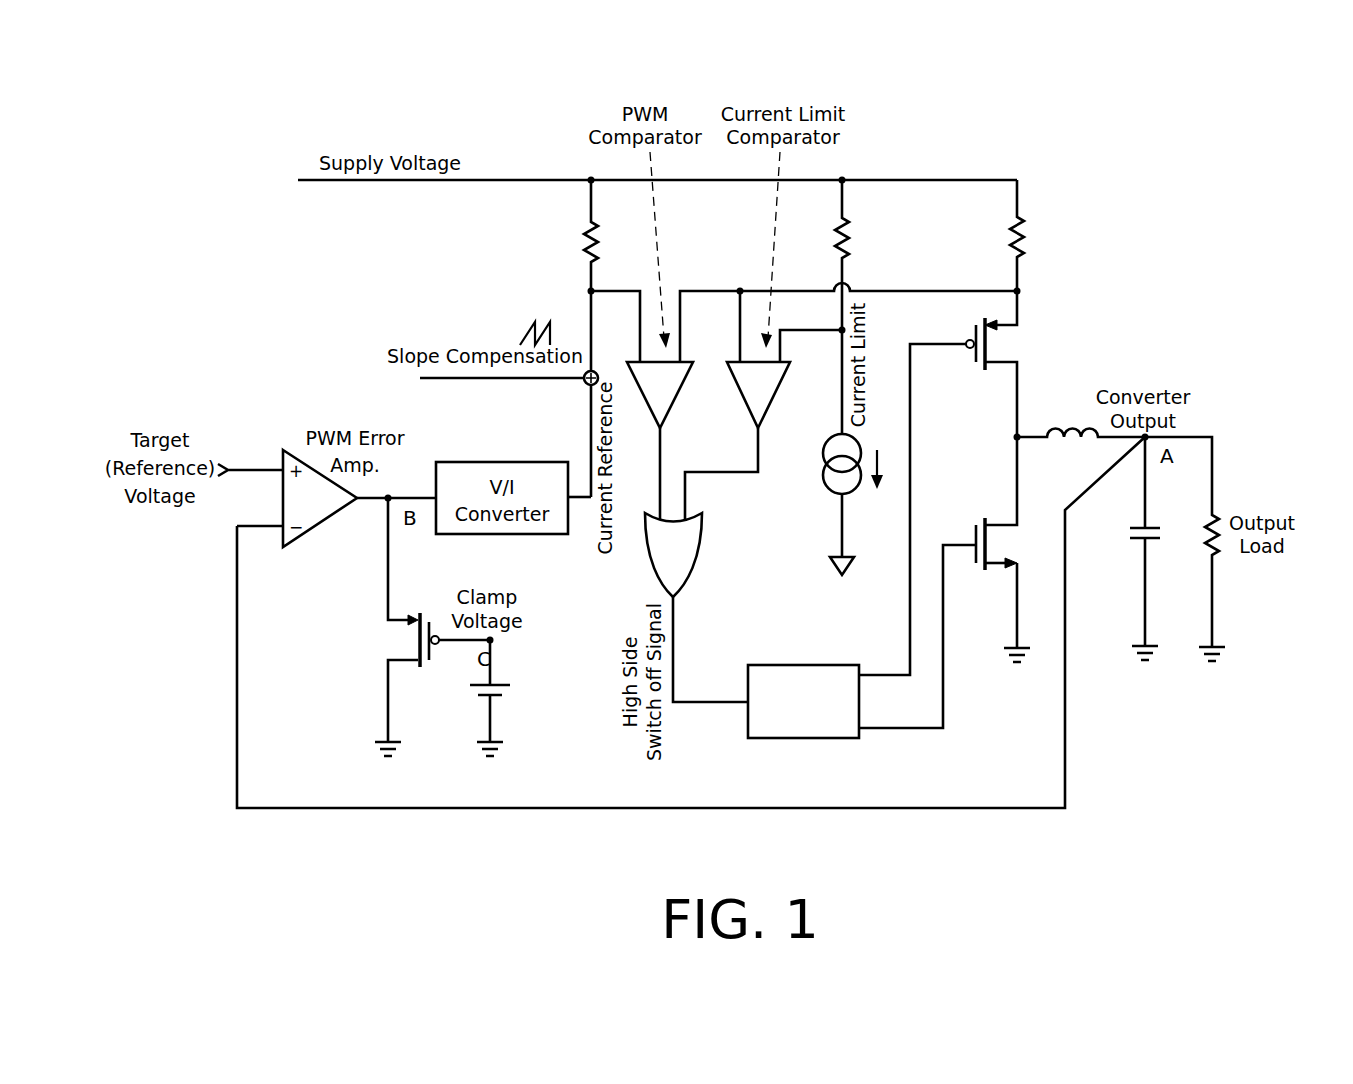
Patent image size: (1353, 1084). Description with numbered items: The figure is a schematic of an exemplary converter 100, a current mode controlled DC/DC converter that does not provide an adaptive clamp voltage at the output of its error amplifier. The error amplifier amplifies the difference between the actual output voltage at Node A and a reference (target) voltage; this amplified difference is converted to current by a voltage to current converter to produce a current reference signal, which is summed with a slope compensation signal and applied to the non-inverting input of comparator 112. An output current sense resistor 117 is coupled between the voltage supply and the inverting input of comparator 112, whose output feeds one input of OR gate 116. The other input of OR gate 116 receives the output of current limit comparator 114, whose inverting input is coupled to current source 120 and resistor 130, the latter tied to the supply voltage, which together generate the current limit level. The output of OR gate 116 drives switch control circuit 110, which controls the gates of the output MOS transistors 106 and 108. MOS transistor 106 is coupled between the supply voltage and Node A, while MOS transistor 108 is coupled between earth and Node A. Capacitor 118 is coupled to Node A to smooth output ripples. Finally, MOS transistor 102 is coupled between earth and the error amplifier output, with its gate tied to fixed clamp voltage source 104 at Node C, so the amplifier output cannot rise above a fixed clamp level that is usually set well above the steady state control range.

The converter 100 is at (1108, 132).
The MOS transistor 102 is at (417, 638).
The fixed clamp voltage source 104 is at (505, 683).
The MOS transistor 106 is at (992, 340).
The MOS transistor 108 is at (975, 545).
The switch control circuit 110 is at (805, 738).
The comparator 112 is at (674, 390).
The current limit comparator 114 is at (772, 390).
The OR gate 116 is at (700, 554).
The output current sense resistor 117 is at (1028, 232).
The capacitor 118 is at (1137, 540).
The current source 120 is at (826, 496).
The resistor 130 is at (850, 228).